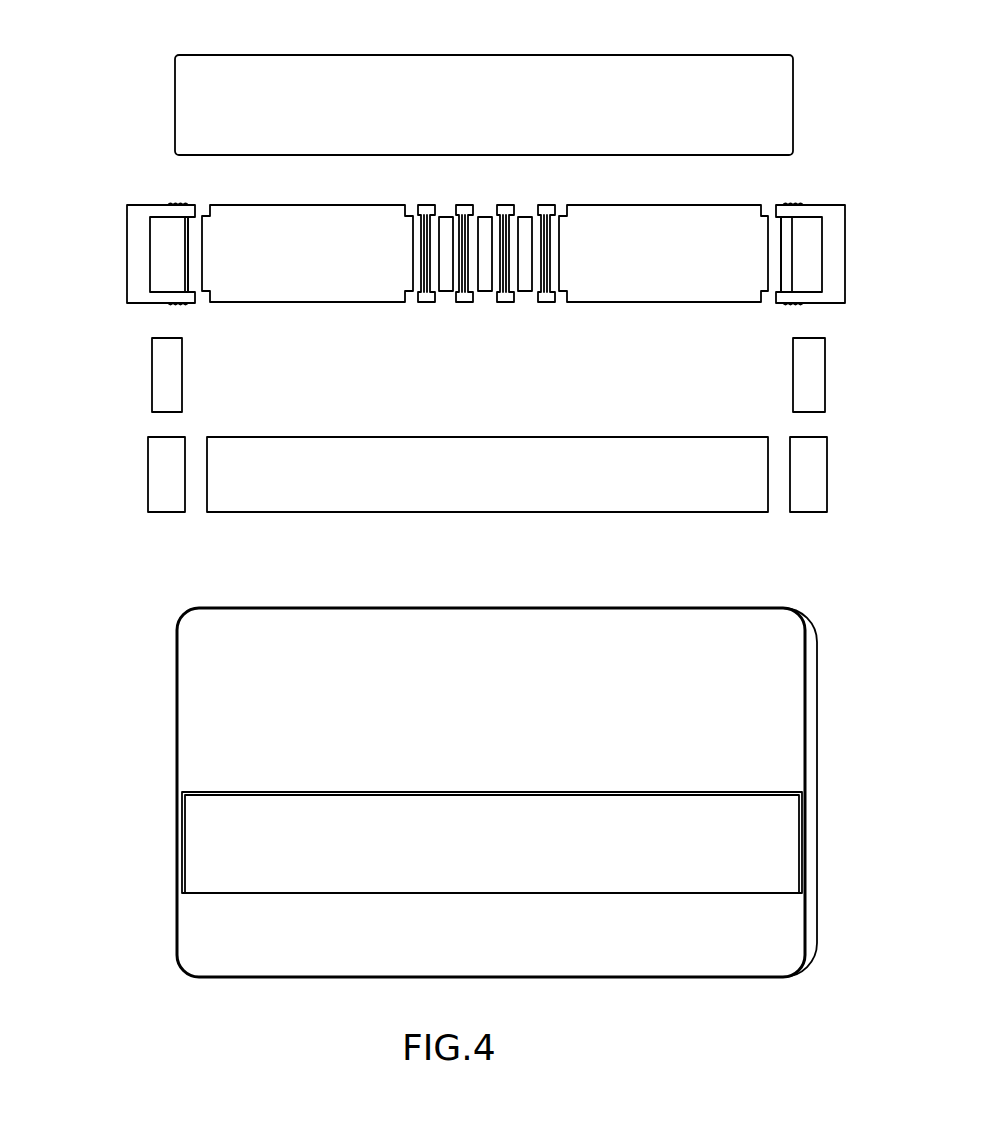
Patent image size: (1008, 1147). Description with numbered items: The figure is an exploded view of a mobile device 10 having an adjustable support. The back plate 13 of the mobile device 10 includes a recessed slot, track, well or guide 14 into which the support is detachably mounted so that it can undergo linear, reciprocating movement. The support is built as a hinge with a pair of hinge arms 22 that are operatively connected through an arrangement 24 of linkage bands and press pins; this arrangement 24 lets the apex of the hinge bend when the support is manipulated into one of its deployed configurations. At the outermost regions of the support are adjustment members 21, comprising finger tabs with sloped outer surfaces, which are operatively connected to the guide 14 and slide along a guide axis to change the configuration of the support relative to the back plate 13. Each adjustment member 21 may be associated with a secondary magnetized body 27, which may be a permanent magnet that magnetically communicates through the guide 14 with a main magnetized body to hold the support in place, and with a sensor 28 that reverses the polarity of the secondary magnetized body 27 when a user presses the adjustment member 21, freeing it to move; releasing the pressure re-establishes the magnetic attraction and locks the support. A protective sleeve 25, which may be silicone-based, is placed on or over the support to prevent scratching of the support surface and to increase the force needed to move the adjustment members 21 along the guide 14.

The mobile device 10 is at (423, 792).
The back plate 13 is at (212, 720).
The guide 14 is at (212, 855).
The adjustment members 21 is at (150, 258).
The hinge arms 22 is at (252, 265).
The arrangement of linkage bands and press pins 24 is at (516, 373).
The protective sleeve 25 is at (763, 123).
The secondary magnetized body 27 is at (166, 482).
The sensor 28 is at (152, 380).